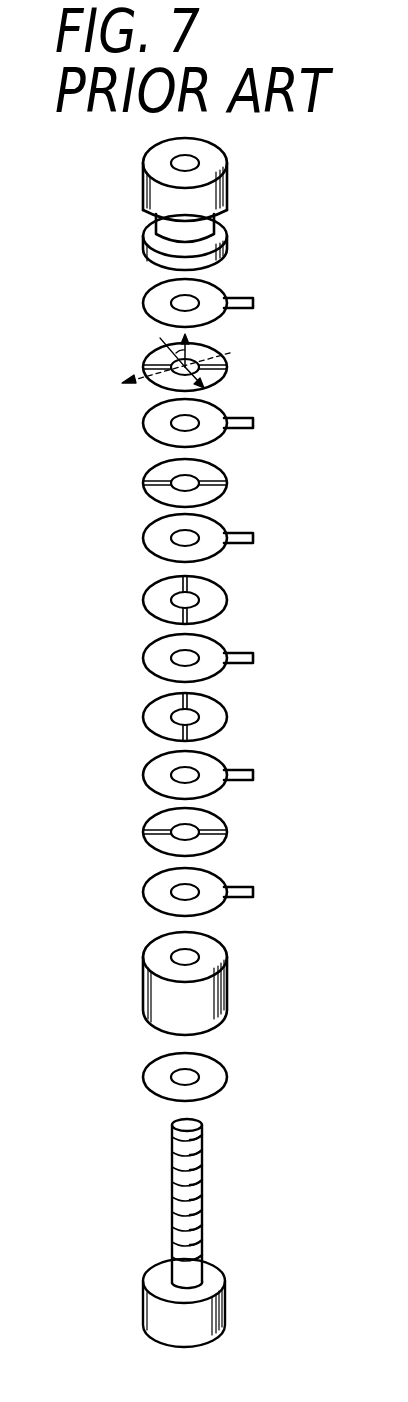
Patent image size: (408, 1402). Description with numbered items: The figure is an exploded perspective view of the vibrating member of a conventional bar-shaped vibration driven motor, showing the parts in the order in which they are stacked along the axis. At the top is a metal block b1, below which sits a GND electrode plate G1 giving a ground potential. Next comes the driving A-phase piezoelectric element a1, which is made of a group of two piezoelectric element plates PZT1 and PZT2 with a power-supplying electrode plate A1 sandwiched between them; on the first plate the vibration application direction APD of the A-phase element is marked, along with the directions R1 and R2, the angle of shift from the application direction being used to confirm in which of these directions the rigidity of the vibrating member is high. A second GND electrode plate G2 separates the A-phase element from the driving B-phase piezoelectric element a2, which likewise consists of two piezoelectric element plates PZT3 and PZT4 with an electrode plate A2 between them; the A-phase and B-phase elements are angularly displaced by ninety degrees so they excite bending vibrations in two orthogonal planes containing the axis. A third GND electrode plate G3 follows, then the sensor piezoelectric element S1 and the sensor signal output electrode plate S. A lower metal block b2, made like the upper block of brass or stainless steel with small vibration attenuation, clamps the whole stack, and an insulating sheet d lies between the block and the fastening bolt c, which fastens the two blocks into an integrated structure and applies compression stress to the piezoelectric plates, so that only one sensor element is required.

The metal block b1 is at (117, 138).
The GND electrode plate G1 is at (253, 304).
The driving A-phase piezoelectric element a1 is at (204, 415).
The piezoelectric element plate PZT1 is at (212, 352).
The vibration application direction APD is at (194, 351).
The direction R1 is at (205, 381).
The direction R2 is at (135, 371).
The electrode plate A1 is at (253, 424).
The piezoelectric element plate PZT2 is at (215, 474).
The GND electrode plate G2 is at (253, 539).
The driving B-phase piezoelectric element a2 is at (205, 662).
The piezoelectric element plate PZT3 is at (217, 597).
The electrode plate A2 is at (253, 658).
The piezoelectric element plate PZT4 is at (217, 715).
The GND electrode plate G3 is at (253, 775).
The sensor piezoelectric element S1 is at (217, 826).
The sensor signal output electrode plate S is at (253, 893).
The metal block b2 is at (117, 927).
The insulating sheet d is at (117, 1043).
The fastening bolt c is at (160, 1316).